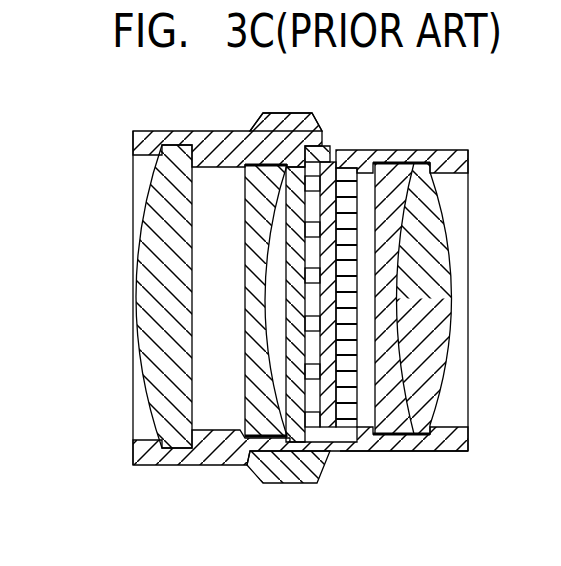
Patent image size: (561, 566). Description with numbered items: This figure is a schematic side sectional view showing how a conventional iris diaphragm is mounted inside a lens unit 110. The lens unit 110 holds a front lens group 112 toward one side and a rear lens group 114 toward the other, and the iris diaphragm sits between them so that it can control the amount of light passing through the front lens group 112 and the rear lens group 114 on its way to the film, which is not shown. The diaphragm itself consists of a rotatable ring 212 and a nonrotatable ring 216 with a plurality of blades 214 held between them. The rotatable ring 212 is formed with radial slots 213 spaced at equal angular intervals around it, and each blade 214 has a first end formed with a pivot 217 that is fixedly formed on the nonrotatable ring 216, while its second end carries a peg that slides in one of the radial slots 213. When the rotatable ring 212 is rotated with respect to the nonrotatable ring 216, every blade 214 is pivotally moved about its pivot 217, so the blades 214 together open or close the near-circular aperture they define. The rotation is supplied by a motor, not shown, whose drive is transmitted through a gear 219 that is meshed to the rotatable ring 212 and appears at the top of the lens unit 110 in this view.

The lens unit 110 is at (258, 291).
The front lens group 112 is at (246, 160).
The rear lens group 114 is at (408, 162).
The rotatable ring 212 is at (312, 146).
The radial slots 213 is at (318, 455).
The blades 214 is at (330, 160).
The nonrotatable ring 216 is at (350, 150).
The pivot 217 is at (387, 452).
The gear 219 is at (262, 128).